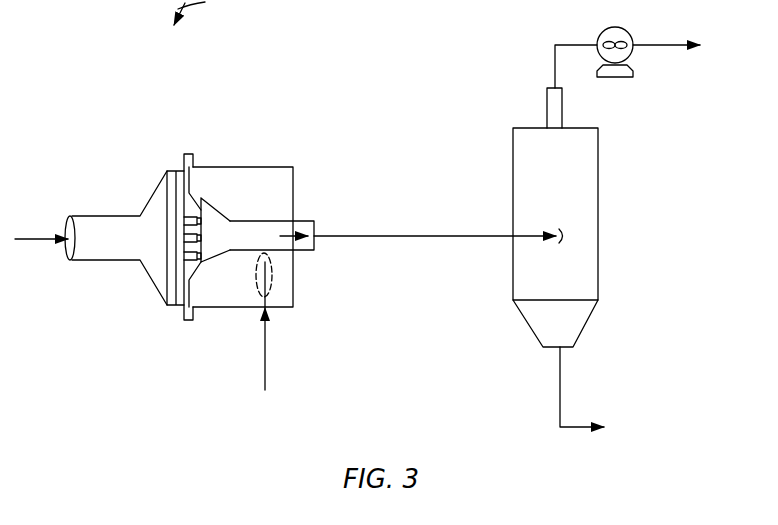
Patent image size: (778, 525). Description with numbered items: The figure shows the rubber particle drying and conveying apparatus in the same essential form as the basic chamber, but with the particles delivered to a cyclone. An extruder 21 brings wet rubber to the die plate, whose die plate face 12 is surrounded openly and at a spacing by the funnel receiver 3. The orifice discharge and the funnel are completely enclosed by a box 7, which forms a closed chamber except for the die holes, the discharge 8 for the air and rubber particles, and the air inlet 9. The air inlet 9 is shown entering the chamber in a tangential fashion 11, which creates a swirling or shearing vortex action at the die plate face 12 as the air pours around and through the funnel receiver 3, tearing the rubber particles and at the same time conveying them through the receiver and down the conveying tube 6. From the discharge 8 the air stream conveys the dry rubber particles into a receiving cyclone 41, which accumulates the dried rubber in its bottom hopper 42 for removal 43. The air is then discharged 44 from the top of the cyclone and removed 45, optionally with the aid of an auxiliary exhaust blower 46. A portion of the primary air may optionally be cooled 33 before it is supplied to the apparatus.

The funnel receiver 3 is at (215, 207).
The conveying tube 6 is at (249, 221).
The box 7 is at (237, 167).
The discharge 8 is at (326, 233).
The air inlet 9 is at (266, 380).
The tangential air entry 11 is at (267, 276).
The die plate face 12 is at (204, 233).
The extruder 21 is at (90, 248).
The cooling 33 is at (222, 0).
The receiving cyclone 41 is at (513, 164).
The bottom hopper 42 is at (585, 325).
The removal 43 is at (575, 426).
The air discharge 44 is at (547, 86).
The air removal 45 is at (668, 48).
The auxiliary exhaust blower 46 is at (624, 28).